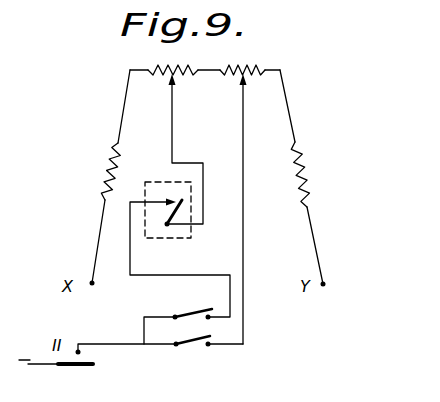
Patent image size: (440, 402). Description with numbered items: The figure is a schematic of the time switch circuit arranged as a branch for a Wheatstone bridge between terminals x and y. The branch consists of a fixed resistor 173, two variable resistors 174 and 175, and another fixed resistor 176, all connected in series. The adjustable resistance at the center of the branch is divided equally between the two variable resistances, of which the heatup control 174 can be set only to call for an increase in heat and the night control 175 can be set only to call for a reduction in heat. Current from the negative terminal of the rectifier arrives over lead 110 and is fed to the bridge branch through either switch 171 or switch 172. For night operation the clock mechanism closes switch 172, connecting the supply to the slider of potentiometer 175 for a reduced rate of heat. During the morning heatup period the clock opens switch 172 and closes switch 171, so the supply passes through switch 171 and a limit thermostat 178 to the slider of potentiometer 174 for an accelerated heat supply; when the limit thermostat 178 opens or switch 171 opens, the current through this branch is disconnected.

The lead 110 is at (50, 367).
The switch 171 is at (195, 312).
The switch 172 is at (195, 347).
The fixed resistor 173 is at (108, 169).
The heatup control variable resistor 174 is at (165, 62).
The night control variable resistor 175 is at (246, 66).
The fixed resistor 176 is at (303, 187).
The limit thermostat 178 is at (192, 229).